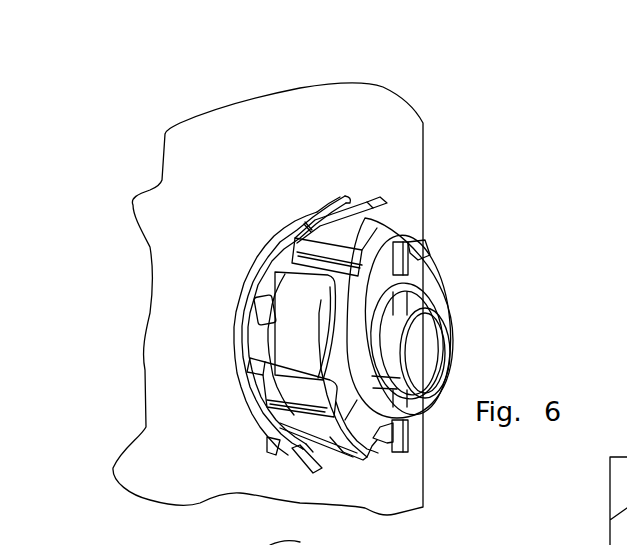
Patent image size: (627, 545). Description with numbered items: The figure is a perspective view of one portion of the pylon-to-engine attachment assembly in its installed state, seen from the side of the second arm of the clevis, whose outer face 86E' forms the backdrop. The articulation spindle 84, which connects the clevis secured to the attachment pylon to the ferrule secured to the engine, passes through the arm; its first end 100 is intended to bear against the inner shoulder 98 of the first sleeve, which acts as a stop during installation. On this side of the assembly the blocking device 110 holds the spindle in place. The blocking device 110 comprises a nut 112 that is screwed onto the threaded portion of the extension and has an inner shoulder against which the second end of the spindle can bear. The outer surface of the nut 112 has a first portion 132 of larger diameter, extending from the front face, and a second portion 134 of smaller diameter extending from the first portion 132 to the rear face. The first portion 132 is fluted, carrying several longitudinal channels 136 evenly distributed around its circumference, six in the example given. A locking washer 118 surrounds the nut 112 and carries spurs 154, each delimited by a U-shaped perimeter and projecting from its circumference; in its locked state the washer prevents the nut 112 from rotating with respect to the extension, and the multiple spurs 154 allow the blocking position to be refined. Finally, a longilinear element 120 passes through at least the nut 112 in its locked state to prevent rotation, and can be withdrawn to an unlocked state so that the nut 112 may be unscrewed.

The outer face of the second arm 86E' is at (257, 299).
The blocking device 110 is at (452, 220).
The nut 112 is at (372, 226).
The locking washer 118 is at (323, 194).
The spur 154 is at (315, 268).
The first portion 132 is at (272, 340).
The longitudinal channel 136 is at (283, 397).
The longilinear element 120 is at (408, 432).
The articulation spindle 84 is at (450, 350).
The second portion 134 is at (357, 400).
The first end of the articulation spindle 100 is at (23, 544).
The inner shoulder 98 is at (502, 501).